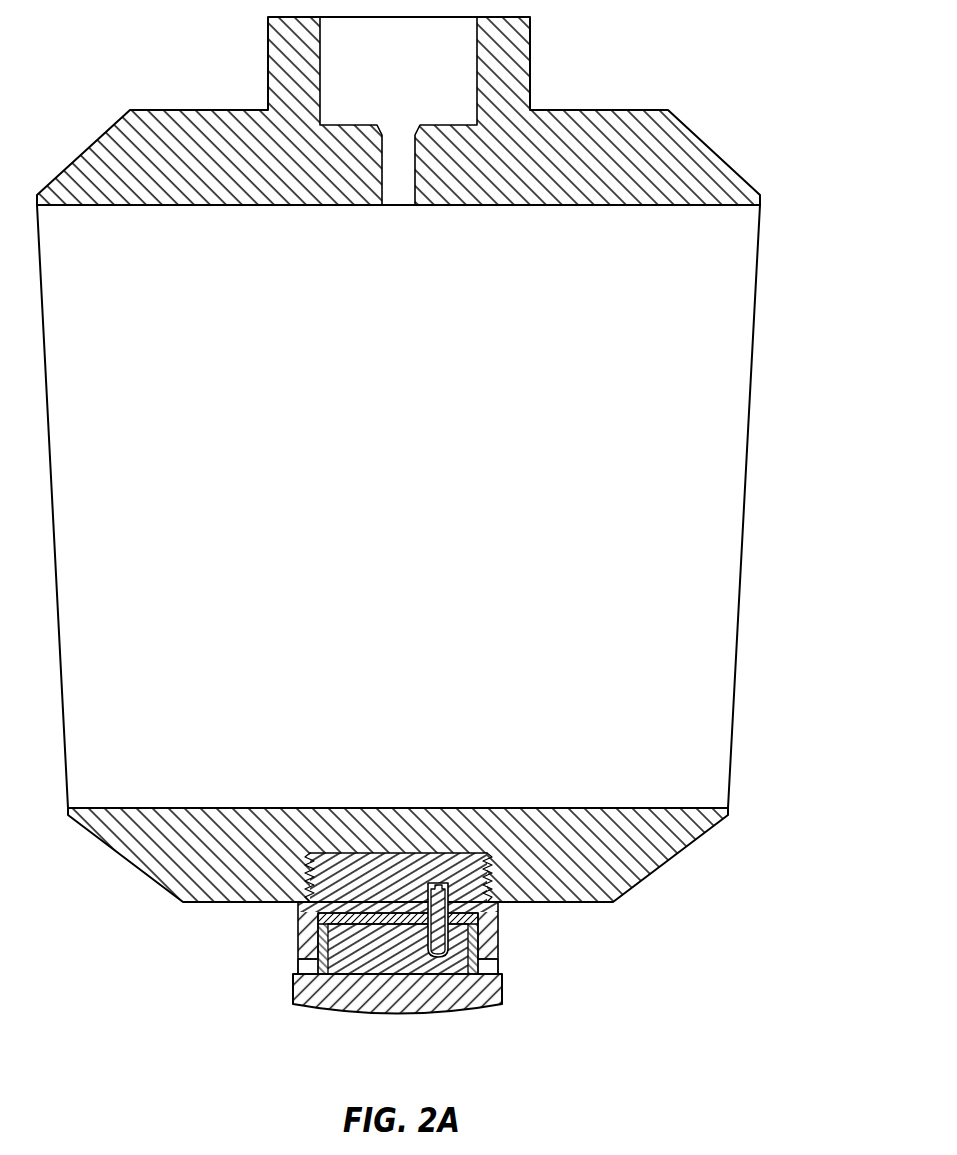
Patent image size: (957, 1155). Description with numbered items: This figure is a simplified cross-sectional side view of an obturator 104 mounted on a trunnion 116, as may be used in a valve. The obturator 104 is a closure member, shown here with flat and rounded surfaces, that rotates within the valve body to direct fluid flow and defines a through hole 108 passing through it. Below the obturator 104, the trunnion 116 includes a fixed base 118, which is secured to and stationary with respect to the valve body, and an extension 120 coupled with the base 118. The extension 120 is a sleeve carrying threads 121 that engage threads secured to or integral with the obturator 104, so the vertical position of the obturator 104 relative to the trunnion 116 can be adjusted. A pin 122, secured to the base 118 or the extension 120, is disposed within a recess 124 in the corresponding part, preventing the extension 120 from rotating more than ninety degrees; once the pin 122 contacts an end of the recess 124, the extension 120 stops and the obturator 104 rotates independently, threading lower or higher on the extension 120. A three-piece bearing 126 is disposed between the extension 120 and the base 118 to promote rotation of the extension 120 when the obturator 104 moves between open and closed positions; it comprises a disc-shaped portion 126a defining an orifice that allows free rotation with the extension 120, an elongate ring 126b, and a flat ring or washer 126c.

The obturator 104 is at (688, 160).
The through hole 108 is at (710, 545).
The trunnion 116 is at (411, 905).
The base 118 is at (315, 996).
The extension 120 is at (300, 913).
The threads 121 is at (490, 862).
The pin 122 is at (437, 948).
The recess 124 is at (443, 885).
The bearing 126 is at (485, 952).
The disc-shaped portion 126a is at (498, 915).
The elongate ring 126b is at (478, 940).
The washer 126c is at (490, 968).